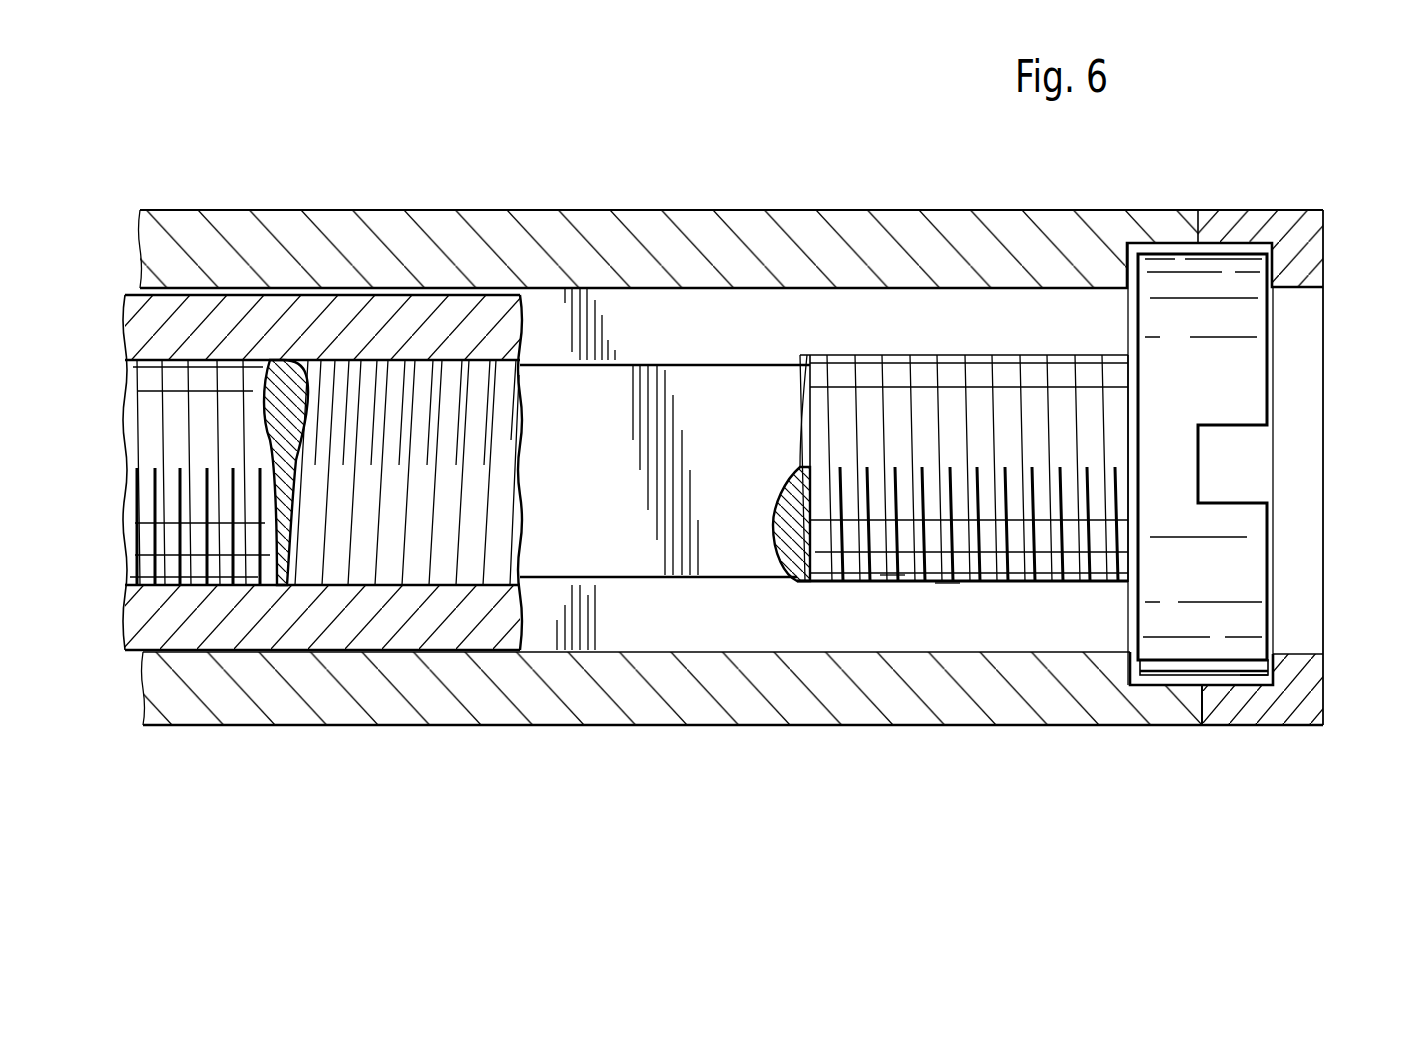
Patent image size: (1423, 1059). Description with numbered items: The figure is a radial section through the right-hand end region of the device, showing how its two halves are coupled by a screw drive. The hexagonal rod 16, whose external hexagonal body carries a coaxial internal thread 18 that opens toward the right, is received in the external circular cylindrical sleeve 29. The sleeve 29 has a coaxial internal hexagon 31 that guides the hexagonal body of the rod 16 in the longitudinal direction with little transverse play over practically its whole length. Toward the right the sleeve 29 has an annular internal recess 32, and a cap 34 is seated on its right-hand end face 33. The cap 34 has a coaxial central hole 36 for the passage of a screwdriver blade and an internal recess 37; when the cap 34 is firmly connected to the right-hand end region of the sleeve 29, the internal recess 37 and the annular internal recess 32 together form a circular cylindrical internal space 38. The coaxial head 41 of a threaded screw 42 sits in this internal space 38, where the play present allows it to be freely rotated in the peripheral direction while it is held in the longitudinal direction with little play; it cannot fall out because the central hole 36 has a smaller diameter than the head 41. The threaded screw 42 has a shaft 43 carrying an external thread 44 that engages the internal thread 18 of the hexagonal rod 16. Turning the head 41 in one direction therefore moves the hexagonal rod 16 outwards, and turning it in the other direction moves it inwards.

The hexagonal rod 16 is at (270, 318).
The internal thread 18 is at (387, 567).
The external circular cylindrical sleeve 29 is at (504, 236).
The internal hexagon 31 is at (570, 478).
The annular internal recess 32 is at (1142, 668).
The right-hand end face 33 is at (1203, 692).
The cap 34 is at (1295, 699).
The central hole 36 is at (1295, 564).
The internal recess 37 is at (1250, 678).
The circular cylindrical internal space 38 is at (1285, 664).
The head 41 is at (1238, 390).
The threaded screw 42 is at (947, 584).
The shaft 43 is at (892, 562).
The external thread 44 is at (880, 355).